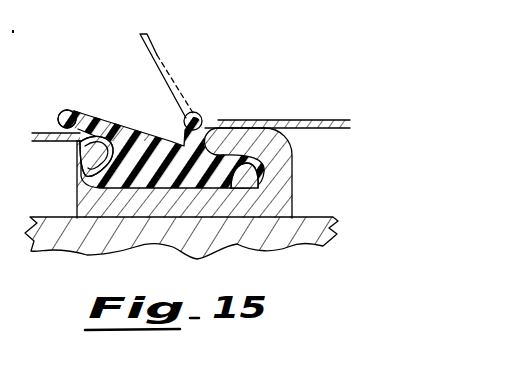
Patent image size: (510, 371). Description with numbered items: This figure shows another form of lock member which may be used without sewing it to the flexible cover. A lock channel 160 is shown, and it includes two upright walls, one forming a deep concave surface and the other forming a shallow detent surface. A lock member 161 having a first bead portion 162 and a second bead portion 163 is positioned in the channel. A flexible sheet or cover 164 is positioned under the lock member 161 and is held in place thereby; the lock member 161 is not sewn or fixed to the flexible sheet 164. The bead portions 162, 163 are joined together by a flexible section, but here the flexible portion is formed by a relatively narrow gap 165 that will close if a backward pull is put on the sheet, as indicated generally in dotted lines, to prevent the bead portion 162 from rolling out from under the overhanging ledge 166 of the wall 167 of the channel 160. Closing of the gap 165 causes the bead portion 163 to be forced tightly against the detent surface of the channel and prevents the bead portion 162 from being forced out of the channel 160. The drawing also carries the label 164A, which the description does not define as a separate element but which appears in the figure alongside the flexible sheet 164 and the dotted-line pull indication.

The lock channel 160 is at (82, 205).
The lock member 161 is at (197, 106).
The first bead portion 162 is at (262, 166).
The second bead portion 163 is at (84, 182).
The flexible sheet or cover 164 is at (166, 166).
The cover plate 164A is at (163, 61).
The gap 165 is at (176, 136).
The overhanging ledge 166 is at (221, 128).
The wall 167 is at (283, 197).